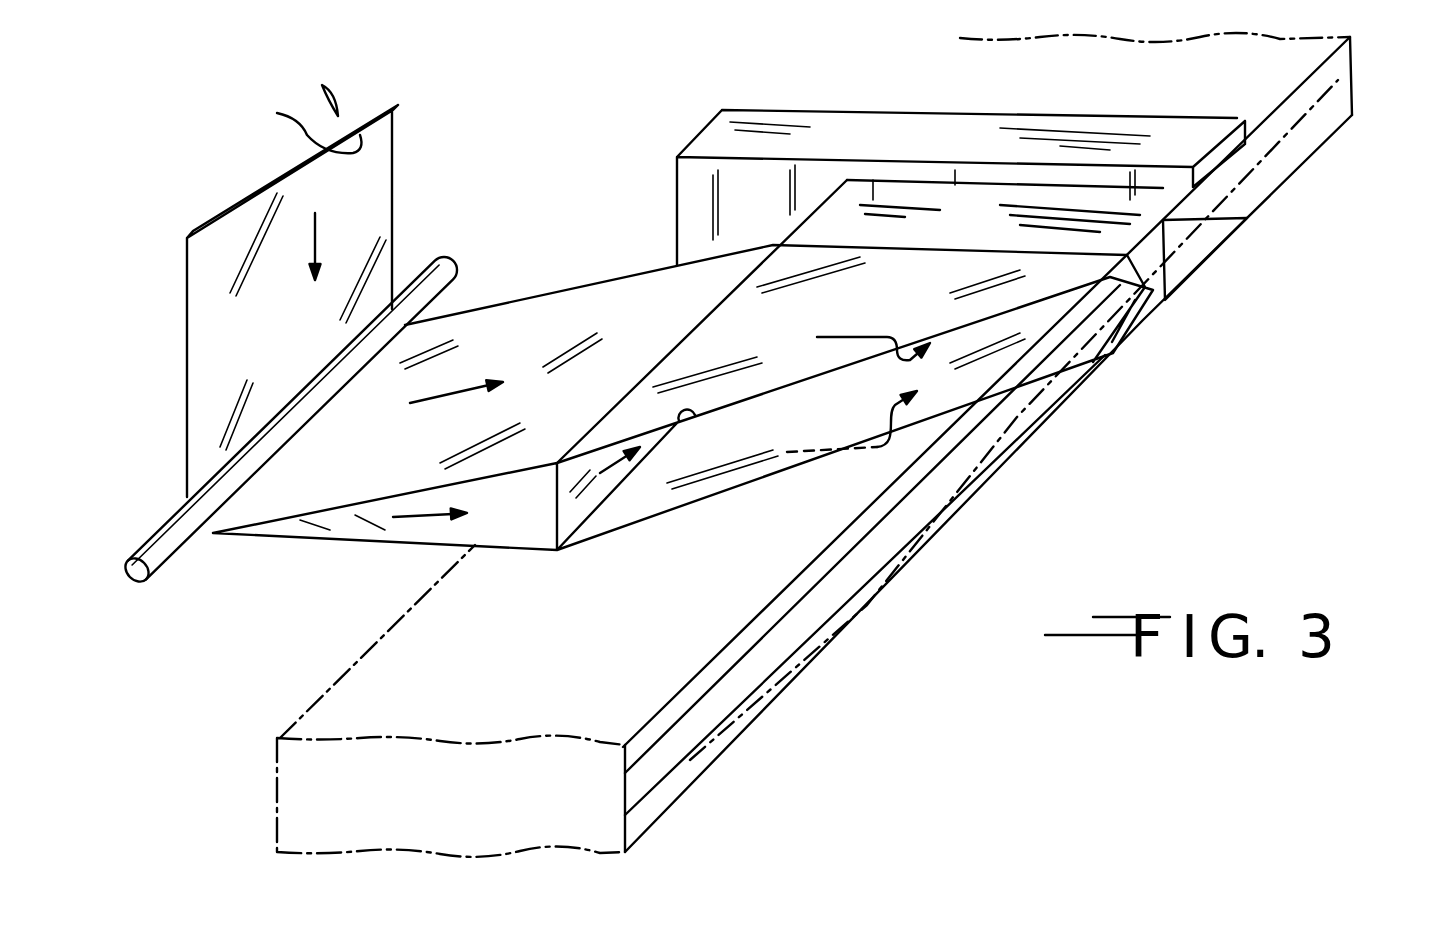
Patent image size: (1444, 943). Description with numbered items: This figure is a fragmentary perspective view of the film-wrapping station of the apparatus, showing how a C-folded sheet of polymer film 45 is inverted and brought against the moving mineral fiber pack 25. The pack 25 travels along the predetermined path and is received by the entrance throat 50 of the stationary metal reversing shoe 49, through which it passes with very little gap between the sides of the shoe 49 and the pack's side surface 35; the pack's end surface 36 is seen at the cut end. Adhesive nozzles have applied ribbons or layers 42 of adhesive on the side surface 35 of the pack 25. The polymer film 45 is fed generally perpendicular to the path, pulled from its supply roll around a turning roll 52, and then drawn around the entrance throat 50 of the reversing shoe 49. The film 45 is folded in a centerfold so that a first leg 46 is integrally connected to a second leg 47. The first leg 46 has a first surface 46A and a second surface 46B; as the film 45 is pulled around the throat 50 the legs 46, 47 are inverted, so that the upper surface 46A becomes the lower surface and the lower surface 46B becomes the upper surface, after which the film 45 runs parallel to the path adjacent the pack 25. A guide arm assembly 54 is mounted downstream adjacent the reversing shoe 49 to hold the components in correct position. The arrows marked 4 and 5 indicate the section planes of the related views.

The mineral fiber pack 25 is at (600, 668).
The side surface 35 is at (743, 727).
The end surface 36 is at (470, 821).
The layer of adhesive 42 is at (1008, 456).
The polymer film 45 is at (293, 347).
The first leg 46 is at (397, 143).
The first surface 46A is at (563, 327).
The second surface 46B is at (383, 108).
The second leg 47 is at (340, 104).
The metal reversing shoe 49 is at (660, 338).
The entrance throat 50 is at (673, 423).
The turning roll 52 is at (180, 564).
The guide arm assembly 54 is at (893, 112).
The section line 4- 4 is at (893, 327).
The section line 5- 5 is at (1407, 100).